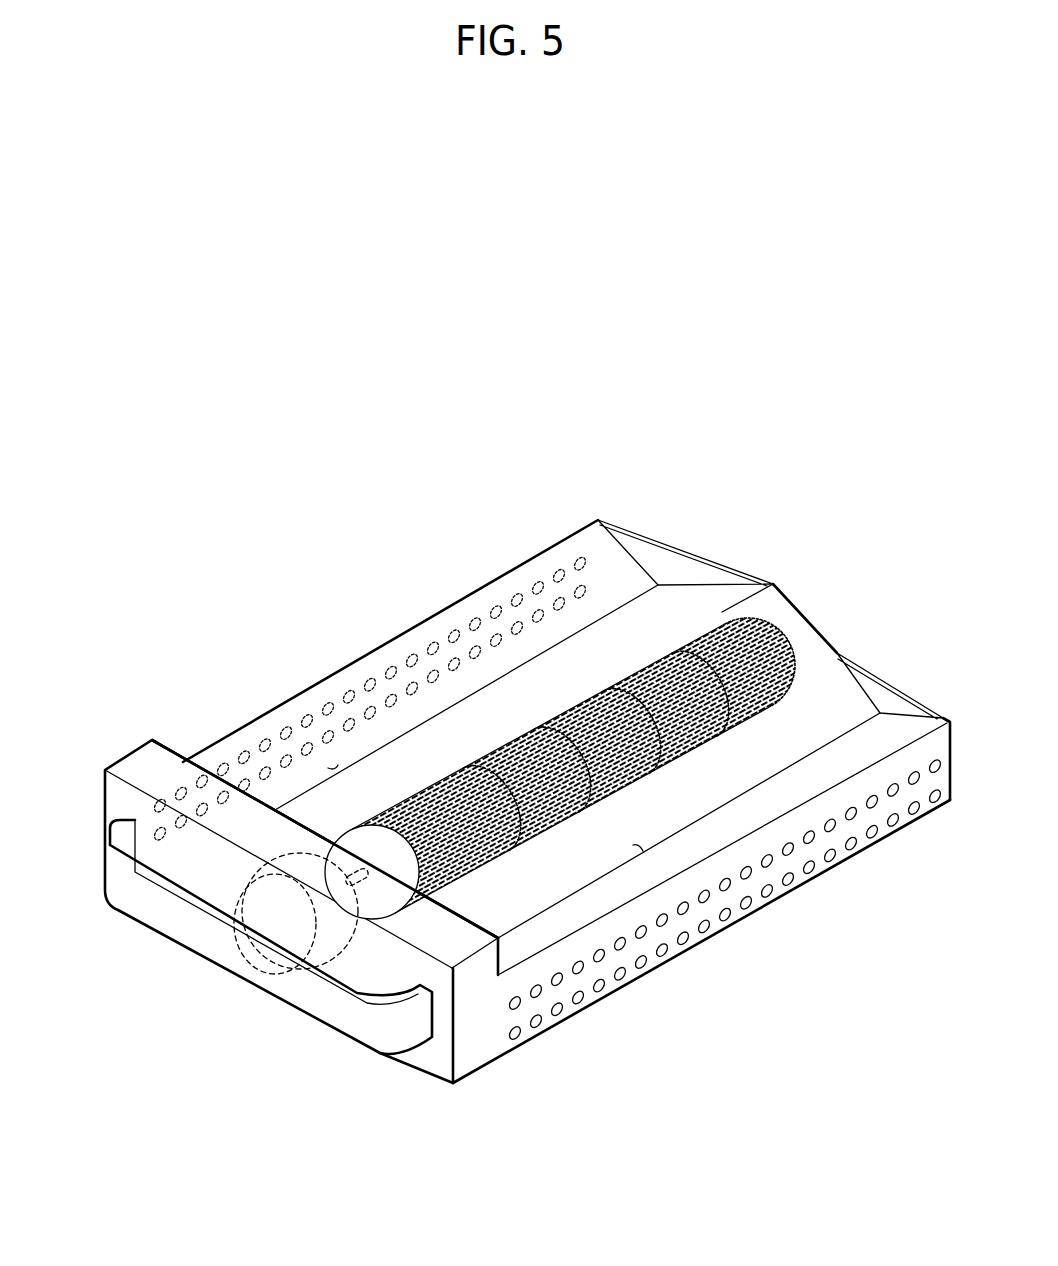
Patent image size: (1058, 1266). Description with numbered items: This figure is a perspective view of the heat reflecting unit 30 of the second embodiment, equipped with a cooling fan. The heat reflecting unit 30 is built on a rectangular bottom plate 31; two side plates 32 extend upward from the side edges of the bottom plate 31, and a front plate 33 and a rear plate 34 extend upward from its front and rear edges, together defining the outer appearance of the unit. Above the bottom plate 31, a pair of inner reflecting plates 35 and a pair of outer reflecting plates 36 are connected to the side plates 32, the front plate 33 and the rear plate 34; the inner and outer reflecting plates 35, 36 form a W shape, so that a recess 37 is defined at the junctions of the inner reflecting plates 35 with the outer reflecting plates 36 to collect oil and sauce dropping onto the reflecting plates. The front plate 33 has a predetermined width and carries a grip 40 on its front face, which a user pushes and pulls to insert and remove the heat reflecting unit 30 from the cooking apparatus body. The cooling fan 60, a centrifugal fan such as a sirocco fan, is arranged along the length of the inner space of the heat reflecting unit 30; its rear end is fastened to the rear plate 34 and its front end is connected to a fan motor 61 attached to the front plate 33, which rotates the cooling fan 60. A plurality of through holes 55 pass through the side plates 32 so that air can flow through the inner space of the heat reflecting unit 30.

The heat reflecting unit 30 is at (523, 837).
The bottom plate 31 is at (540, 1043).
The side plate 32 is at (620, 957).
The front plate 33 is at (442, 1020).
The rear plate 34 is at (649, 548).
The inner reflecting plate 35 is at (457, 727).
The outer reflecting plate 36 is at (265, 740).
The recess 37 is at (338, 765).
The grip 40 is at (207, 947).
The through holes 55 is at (487, 612).
The cooling fan 60 is at (707, 623).
The fan motor 61 is at (250, 898).